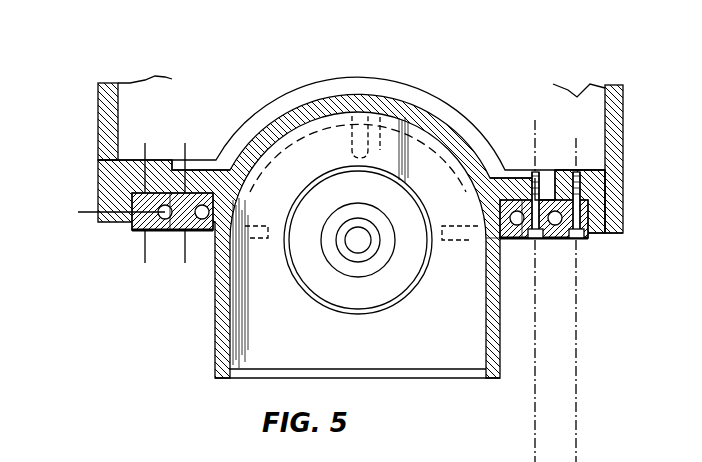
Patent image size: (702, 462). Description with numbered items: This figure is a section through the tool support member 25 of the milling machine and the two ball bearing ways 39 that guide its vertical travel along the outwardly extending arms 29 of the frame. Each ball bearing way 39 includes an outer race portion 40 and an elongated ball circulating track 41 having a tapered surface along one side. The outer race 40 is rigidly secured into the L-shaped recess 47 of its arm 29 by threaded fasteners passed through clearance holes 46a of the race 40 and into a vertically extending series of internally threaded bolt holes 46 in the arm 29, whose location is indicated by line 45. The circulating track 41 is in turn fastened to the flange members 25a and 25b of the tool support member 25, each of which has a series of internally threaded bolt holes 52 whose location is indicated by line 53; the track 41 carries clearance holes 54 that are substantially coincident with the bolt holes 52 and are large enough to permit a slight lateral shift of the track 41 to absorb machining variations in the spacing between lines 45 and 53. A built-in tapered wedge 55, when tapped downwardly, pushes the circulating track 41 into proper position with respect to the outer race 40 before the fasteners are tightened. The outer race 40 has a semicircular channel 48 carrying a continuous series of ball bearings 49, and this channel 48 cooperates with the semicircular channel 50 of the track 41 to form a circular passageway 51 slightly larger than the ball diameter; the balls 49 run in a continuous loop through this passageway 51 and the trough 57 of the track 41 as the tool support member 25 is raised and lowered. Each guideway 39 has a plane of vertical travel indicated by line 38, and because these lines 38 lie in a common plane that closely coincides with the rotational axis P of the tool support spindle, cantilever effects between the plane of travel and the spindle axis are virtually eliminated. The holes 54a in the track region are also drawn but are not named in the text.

The tool support member 25 is at (215, 350).
The flange member 25a is at (205, 180).
The flange member 25b is at (510, 178).
The outwardly extending arm 29 is at (104, 100).
The line indicating plane of vertical travel 38 is at (80, 212).
The ball bearing way 39 is at (152, 260).
The outer race portion 40 is at (133, 232).
The ball circulating track 41 is at (190, 237).
The line indicating bolt hole location 45 is at (577, 355).
The internally threaded bolt hole 46 is at (598, 160).
The clearance hole 46a is at (592, 245).
The L-shaped recess 47 is at (603, 173).
The semicircular channel 48 is at (577, 200).
The ball bearings 49 is at (600, 215).
The semicircular channel 50 is at (542, 250).
The circular passageway 51 is at (557, 242).
The internally threaded bolt hole 52 is at (538, 200).
The line indicating bolt hole location 53 is at (533, 418).
The clearance hole 54 is at (530, 240).
The bolt hole 54a is at (222, 203).
The tapered wedge 55 is at (232, 240).
The trough 57 is at (520, 198).
The rotational axis of tool support spindle P is at (358, 240).